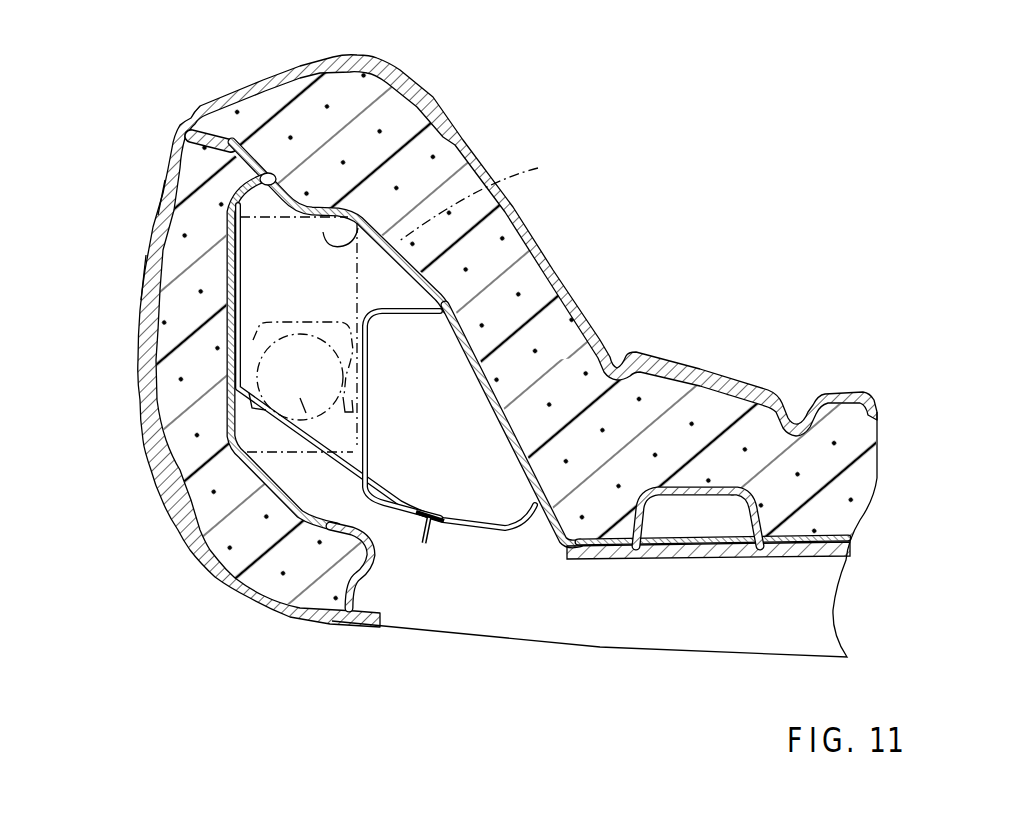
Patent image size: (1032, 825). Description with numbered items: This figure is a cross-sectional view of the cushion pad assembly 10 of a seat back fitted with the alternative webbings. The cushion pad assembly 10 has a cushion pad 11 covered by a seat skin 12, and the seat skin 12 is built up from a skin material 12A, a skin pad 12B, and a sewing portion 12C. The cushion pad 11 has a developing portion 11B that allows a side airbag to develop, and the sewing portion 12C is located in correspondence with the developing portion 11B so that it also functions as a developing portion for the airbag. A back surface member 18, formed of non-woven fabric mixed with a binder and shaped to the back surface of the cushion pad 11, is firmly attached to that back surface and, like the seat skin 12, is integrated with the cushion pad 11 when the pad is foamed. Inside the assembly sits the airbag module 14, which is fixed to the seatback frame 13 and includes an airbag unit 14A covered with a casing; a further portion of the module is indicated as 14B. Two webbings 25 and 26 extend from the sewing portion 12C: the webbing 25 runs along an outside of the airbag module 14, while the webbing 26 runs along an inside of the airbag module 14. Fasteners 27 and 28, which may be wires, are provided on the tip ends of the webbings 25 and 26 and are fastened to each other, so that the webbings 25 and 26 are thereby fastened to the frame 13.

The cushion pad assembly 10 is at (733, 362).
The cushion pad 11 is at (443, 162).
The developing portion 11B is at (278, 182).
The seat skin 12 is at (200, 103).
The skin material 12A is at (158, 203).
The skin pad 12B is at (158, 270).
The sewing portion 12C is at (216, 126).
The seatback frame 13 is at (510, 531).
The airbag module 14 is at (362, 291).
The airbag unit 14A is at (360, 427).
The frame front wall 14B is at (492, 195).
The back surface member 18 is at (226, 386).
The webbing 25 is at (242, 300).
The webbing 26 is at (325, 230).
The fastener 27 is at (420, 524).
The fastener 28 is at (432, 528).